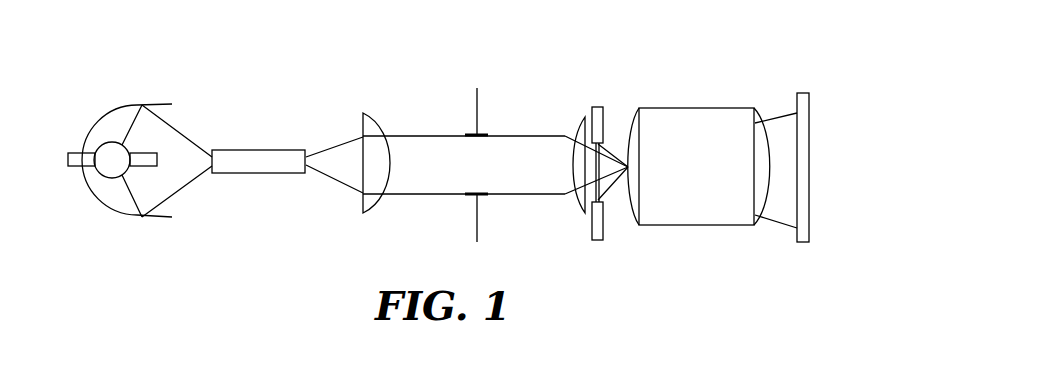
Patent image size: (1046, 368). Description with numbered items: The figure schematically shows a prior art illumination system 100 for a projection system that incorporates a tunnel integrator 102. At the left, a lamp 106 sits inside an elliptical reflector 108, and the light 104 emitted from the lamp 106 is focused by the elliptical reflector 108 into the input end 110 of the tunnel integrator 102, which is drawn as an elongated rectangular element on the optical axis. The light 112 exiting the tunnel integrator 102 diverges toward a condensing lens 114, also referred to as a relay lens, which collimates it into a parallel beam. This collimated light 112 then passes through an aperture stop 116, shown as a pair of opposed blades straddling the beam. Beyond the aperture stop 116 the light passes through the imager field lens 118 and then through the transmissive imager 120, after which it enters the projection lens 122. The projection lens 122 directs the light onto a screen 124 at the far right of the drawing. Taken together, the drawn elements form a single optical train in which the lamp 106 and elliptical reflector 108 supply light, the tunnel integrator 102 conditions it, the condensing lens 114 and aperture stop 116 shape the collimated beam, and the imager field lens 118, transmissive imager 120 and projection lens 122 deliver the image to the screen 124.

The illumination system 100 is at (752, 64).
The tunnel integrator 102 is at (260, 150).
The light 104 is at (168, 122).
The lamp 106 is at (75, 167).
The elliptical reflector 108 is at (99, 122).
The input end 110 is at (208, 174).
The light 112 is at (533, 134).
The condensing lens 114 is at (370, 215).
The aperture stop 116 is at (475, 105).
The imager field lens 118 is at (582, 215).
The transmissive imager 120 is at (603, 120).
The projection lens 122 is at (703, 107).
The screen 124 is at (805, 243).